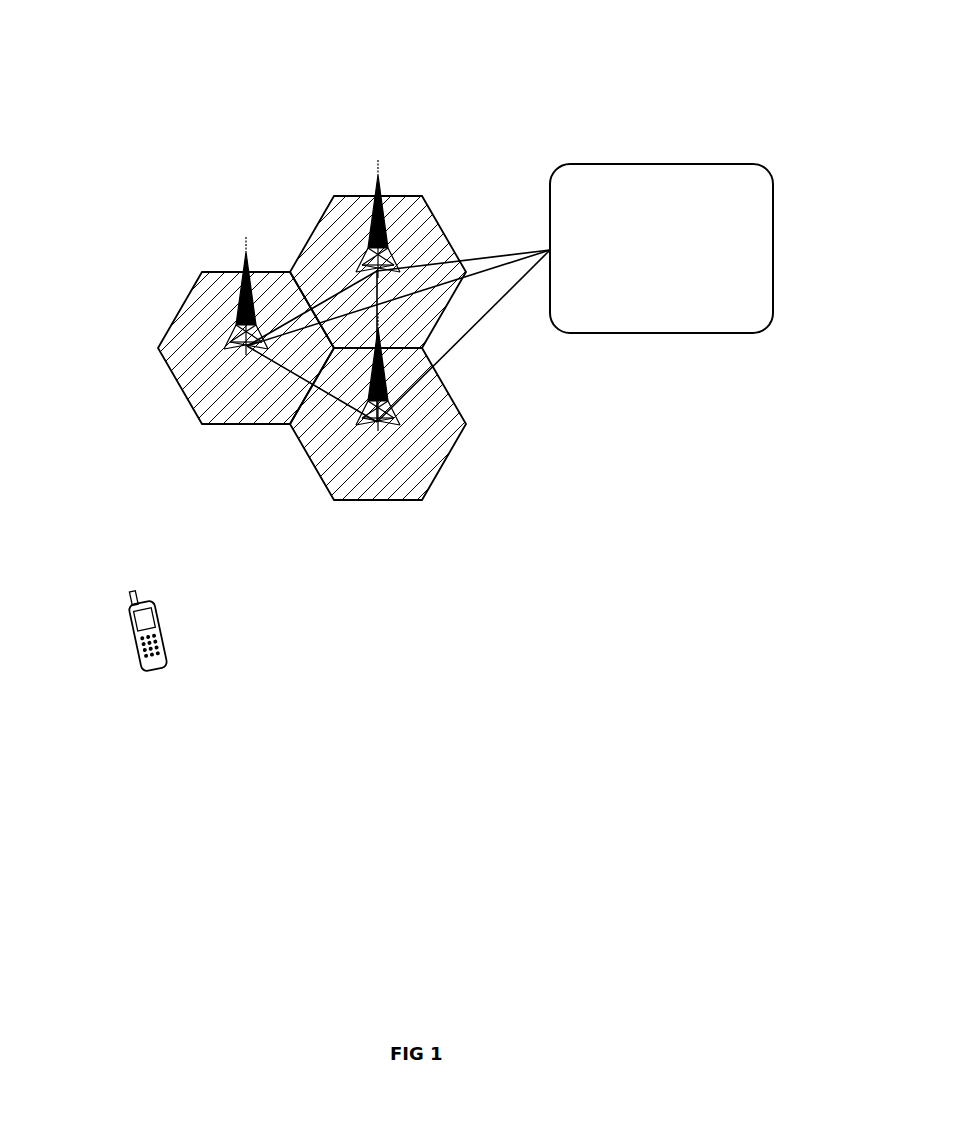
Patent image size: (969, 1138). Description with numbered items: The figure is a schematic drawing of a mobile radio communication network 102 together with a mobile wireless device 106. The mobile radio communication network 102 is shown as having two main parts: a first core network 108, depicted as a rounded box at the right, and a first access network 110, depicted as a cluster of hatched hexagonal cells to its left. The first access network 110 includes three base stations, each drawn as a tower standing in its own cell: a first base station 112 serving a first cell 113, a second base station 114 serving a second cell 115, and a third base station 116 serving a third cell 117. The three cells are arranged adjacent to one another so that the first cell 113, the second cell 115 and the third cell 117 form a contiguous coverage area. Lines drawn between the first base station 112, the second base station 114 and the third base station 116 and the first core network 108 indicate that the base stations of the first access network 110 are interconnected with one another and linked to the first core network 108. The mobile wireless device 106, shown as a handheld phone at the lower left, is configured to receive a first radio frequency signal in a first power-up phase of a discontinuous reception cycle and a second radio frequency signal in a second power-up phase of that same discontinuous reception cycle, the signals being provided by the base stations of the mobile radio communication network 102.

The mobile radio communication network 102 is at (502, 76).
The mobile wireless device 106 is at (128, 627).
The first core network 108 is at (773, 288).
The first access network 110 is at (257, 172).
The first base station 112 is at (240, 312).
The first cell 113 is at (200, 388).
The second base station 114 is at (392, 196).
The second cell 115 is at (345, 197).
The third base station 116 is at (388, 413).
The third cell 117 is at (335, 488).